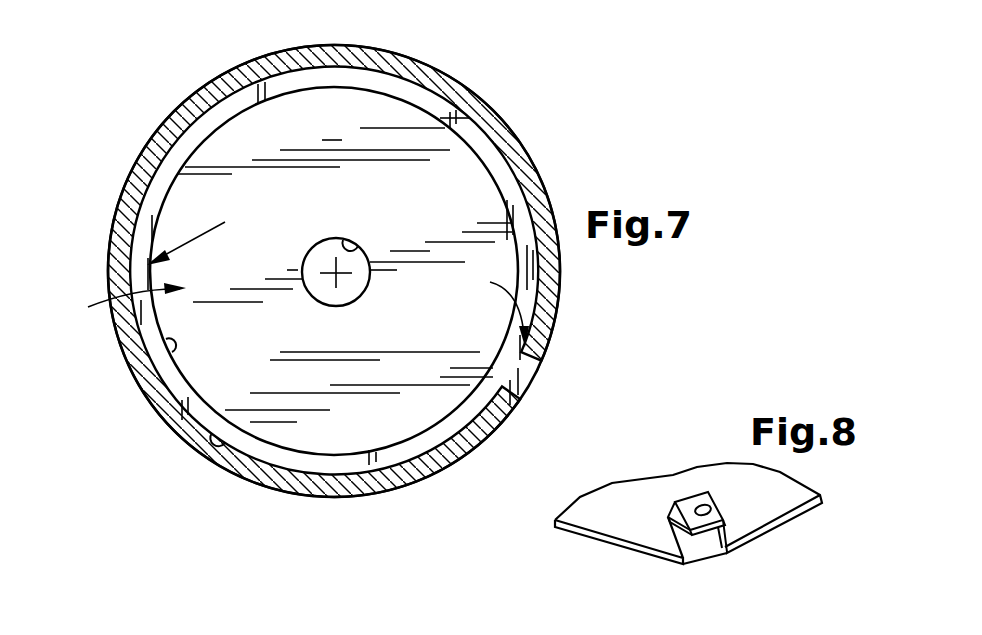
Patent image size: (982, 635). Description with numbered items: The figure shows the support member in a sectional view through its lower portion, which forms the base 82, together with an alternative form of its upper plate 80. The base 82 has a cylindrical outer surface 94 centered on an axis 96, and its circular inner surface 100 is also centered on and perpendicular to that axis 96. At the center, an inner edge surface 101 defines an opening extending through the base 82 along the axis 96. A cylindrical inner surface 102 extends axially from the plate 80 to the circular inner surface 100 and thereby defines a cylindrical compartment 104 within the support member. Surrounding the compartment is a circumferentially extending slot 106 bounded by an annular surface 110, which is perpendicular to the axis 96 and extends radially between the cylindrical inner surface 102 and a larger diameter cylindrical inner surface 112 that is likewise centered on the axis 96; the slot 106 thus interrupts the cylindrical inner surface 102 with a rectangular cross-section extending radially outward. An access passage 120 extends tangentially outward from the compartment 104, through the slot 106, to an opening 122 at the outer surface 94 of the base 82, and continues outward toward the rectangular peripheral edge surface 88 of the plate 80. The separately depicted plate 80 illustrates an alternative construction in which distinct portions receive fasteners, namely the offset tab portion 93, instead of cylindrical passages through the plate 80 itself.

In FIG. 7, the base 82 is at (137, 192).
In FIG. 7, the cylindrical outer surface 94 is at (111, 244).
In FIG. 7, the circular inner surface 100 is at (445, 168).
In FIG. 7, the inner edge surface 101 is at (352, 244).
In FIG. 7, the axis 96 is at (338, 275).
In FIG. 7, the cylindrical inner surface 102 is at (165, 342).
In FIG. 7, the cylindrical compartment 104 is at (115, 304).
In FIG. 7, the circumferentially extending slot 106 is at (207, 237).
In FIG. 7, the annular surface 110 is at (188, 397).
In FIG. 7, the cylindrical inner surface 112 is at (212, 437).
In FIG. 7, the access passage 120 is at (487, 308).
In FIG. 7, the opening 122 is at (528, 390).
In FIG. 8, the plate 80 is at (618, 553).
In FIG. 8, the rectangular peripheral edge surface 88 is at (653, 552).
In FIG. 8, the offset tab portion 93 is at (730, 511).